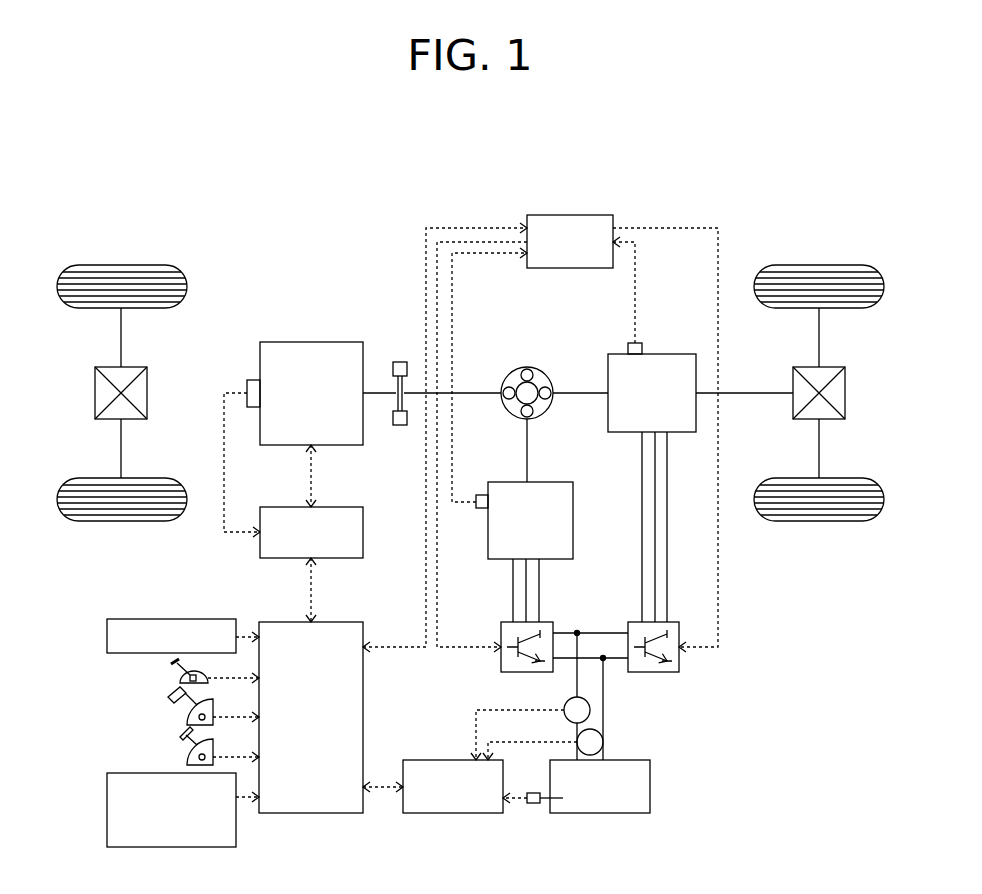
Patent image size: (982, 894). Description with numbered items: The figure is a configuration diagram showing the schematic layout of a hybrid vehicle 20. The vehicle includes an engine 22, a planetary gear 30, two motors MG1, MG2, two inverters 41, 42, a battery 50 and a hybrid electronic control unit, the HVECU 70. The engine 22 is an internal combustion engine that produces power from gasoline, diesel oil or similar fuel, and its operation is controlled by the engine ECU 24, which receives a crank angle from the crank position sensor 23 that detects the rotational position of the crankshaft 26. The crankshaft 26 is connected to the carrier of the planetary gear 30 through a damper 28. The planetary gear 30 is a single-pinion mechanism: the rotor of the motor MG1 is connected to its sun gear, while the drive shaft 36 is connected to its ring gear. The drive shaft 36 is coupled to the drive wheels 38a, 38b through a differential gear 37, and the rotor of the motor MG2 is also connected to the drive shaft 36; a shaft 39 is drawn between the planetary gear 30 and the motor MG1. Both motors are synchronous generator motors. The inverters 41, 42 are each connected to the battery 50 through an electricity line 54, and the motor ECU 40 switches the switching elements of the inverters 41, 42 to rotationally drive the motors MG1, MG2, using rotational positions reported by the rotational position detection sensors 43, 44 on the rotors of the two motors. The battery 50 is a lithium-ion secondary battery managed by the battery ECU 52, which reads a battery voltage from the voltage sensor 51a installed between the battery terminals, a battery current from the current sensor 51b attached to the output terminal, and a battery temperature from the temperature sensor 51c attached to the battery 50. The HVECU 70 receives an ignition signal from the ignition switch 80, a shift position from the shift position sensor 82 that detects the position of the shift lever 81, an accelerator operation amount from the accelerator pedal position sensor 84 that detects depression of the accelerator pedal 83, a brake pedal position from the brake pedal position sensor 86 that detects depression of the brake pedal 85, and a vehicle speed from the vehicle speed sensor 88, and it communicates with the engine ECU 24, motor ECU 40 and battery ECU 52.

The hybrid vehicle 20 is at (690, 190).
The engine 22 is at (335, 342).
The crank position sensor 23 is at (254, 380).
The engine ECU 24 is at (335, 507).
The crankshaft 26 is at (375, 390).
The damper 28 is at (400, 425).
The planetary gear 30 is at (527, 367).
The drive shaft 36 is at (760, 392).
The differential gear 37 is at (826, 366).
The drive wheel 38a is at (815, 264).
The drive wheel 38b is at (816, 522).
The rotation shaft 39 is at (526, 433).
The motor ECU 40 is at (577, 215).
The inverter 41 is at (550, 621).
The inverter 42 is at (678, 621).
The rotational position detection sensor 43 is at (482, 494).
The rotational position detection sensor 44 is at (632, 342).
The battery 50 is at (650, 790).
The voltage sensor 51a is at (603, 742).
The current sensor 51b is at (590, 710).
The temperature sensor 51c is at (533, 808).
The battery ECU 52 is at (455, 759).
The electricity line 54 is at (600, 657).
The HVECU 70 is at (337, 621).
The ignition switch 80 is at (107, 632).
The shift lever 81 is at (175, 664).
The shift position sensor 82 is at (180, 678).
The accelerator pedal 83 is at (168, 704).
The accelerator pedal position sensor 84 is at (187, 718).
The brake pedal 85 is at (180, 748).
The brake pedal position sensor 86 is at (187, 760).
The vehicle speed sensor 88 is at (107, 795).
The motor MG1 is at (552, 481).
The motor MG2 is at (667, 353).